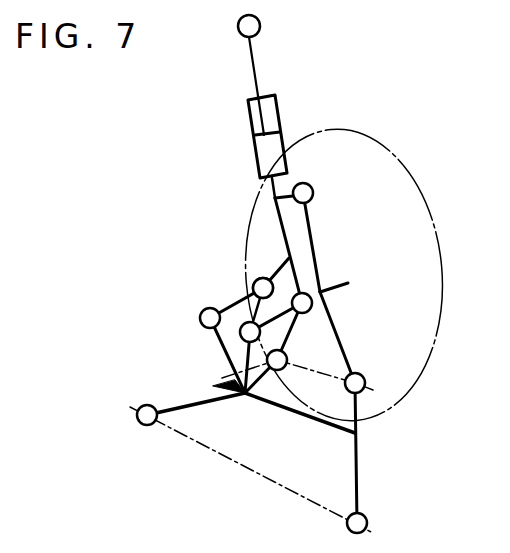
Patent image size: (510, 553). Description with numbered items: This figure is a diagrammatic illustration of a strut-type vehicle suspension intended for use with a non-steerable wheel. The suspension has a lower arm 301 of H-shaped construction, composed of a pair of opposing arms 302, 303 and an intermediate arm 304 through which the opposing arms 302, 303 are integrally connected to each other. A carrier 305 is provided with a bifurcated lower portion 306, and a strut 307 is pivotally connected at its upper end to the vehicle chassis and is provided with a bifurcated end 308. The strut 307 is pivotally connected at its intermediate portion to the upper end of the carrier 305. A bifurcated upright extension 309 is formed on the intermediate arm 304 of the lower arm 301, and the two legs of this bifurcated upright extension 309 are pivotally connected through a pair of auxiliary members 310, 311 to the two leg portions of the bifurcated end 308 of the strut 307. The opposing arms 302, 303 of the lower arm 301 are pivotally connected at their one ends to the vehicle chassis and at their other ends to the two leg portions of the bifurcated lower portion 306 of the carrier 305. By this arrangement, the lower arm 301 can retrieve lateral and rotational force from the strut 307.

The lower arm 301 is at (435, 468).
The opposing arm 302 is at (180, 404).
The opposing arm 303 is at (358, 502).
The intermediate arm 304 is at (297, 415).
The carrier 305 is at (400, 243).
The bifurcated lower portion 306 is at (337, 325).
The strut 307 is at (362, 98).
The bifurcated end 308 is at (270, 270).
The bifurcated upright extension 309 is at (222, 344).
The auxiliary member 310 is at (228, 306).
The auxiliary member 311 is at (247, 298).